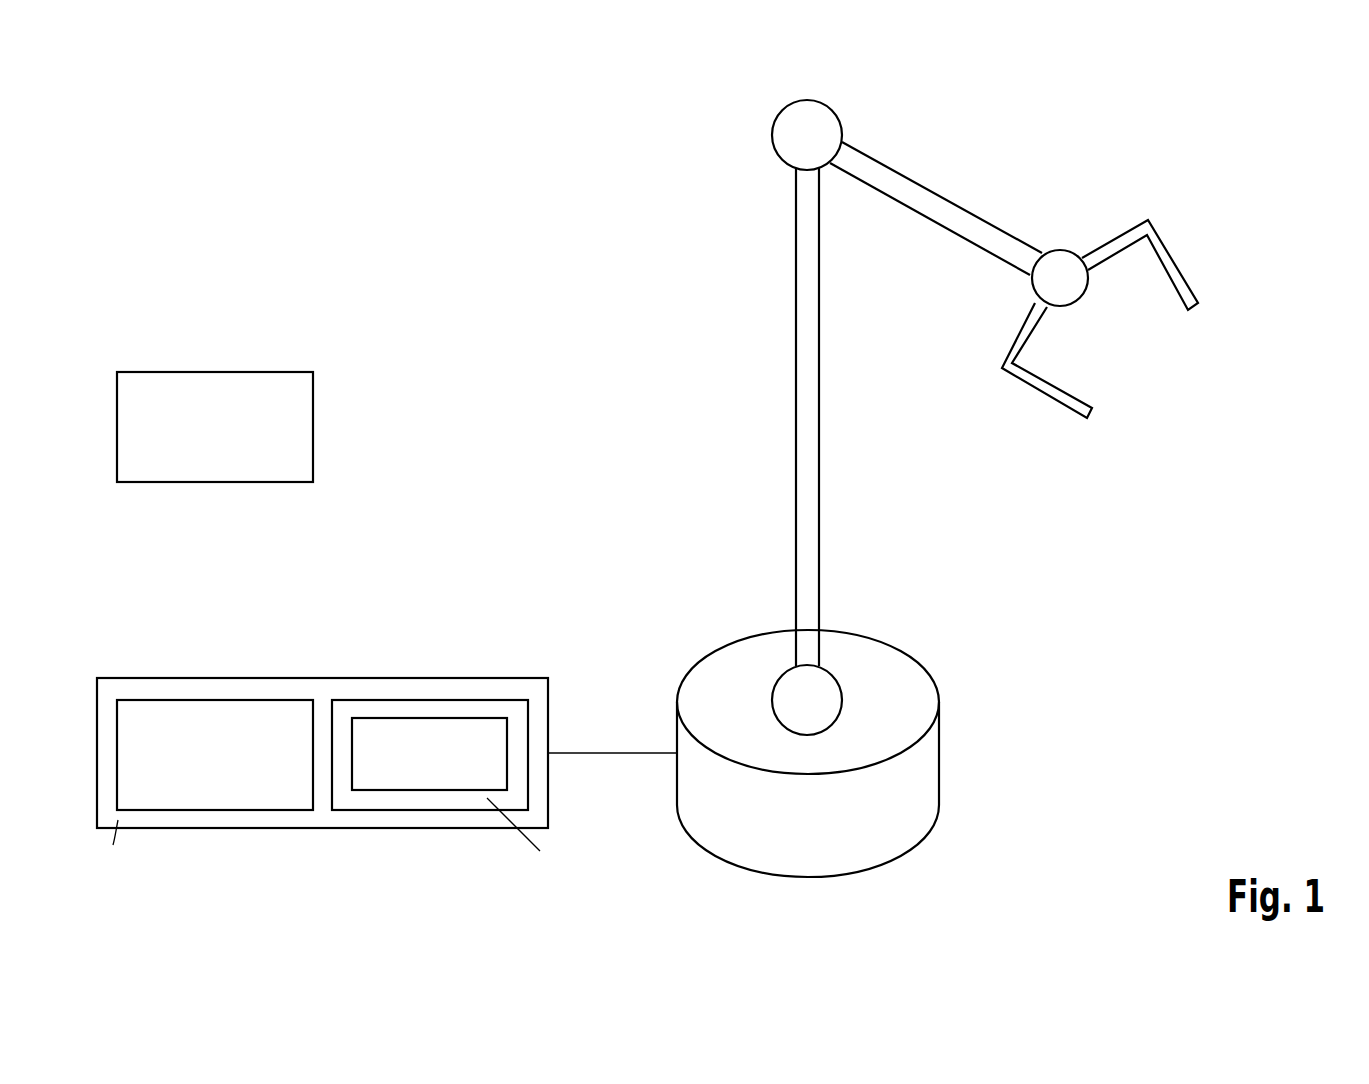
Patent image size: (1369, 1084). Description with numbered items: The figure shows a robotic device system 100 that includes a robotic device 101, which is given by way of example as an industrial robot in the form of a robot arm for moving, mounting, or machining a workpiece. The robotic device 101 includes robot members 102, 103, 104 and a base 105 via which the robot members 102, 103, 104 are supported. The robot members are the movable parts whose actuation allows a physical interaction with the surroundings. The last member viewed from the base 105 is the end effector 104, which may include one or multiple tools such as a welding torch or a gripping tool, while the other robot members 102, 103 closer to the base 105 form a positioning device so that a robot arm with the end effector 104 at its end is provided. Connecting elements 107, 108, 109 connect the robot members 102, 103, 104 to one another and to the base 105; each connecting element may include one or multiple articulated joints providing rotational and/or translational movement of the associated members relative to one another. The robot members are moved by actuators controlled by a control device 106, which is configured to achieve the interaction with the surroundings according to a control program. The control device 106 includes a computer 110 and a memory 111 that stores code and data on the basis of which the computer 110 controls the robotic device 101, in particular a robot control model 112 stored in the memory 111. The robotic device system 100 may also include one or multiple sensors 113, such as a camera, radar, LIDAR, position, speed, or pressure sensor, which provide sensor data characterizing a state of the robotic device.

The robotic device system 100 is at (1257, 124).
The robotic device 101 is at (760, 340).
The robot member 102 is at (803, 462).
The robot member 103 is at (946, 207).
The end effector 104 is at (1173, 268).
The base 105 is at (923, 773).
The control device 106 is at (322, 678).
The connecting element 107 is at (790, 687).
The connecting element 108 is at (782, 140).
The connecting element 109 is at (1058, 258).
The computer 110 is at (238, 700).
The memory 111 is at (414, 699).
The robot control model 112 is at (464, 718).
The sensor 113 is at (214, 372).